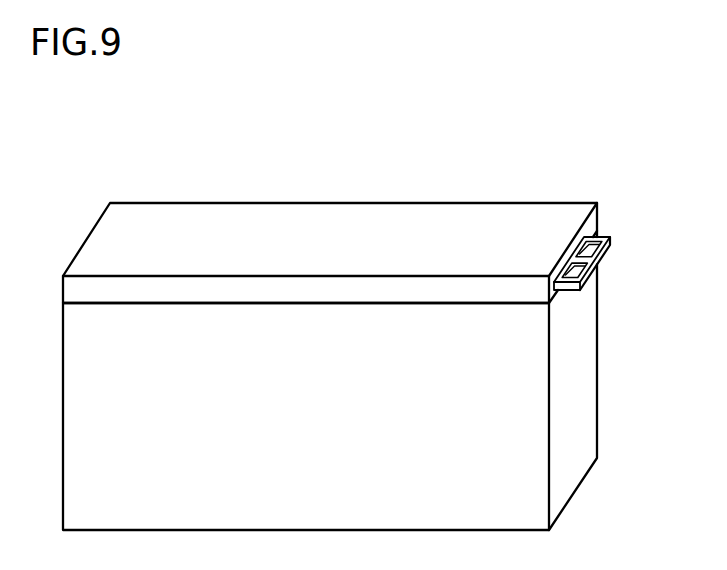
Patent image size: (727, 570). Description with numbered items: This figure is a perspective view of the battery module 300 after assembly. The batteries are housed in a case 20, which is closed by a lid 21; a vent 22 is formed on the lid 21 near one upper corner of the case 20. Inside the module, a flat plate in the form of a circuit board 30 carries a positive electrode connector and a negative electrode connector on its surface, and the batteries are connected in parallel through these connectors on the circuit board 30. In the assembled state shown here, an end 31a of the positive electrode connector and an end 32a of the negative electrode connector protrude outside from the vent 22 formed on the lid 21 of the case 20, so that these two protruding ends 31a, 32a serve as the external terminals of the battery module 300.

The battery module 300 is at (572, 158).
The case 20 is at (587, 370).
The lid 21 is at (358, 220).
The vent 22 is at (596, 233).
The circuit board 30 is at (607, 237).
The end of the positive electrode connector 31a is at (602, 252).
The end of the negative electrode connector 32a is at (597, 276).